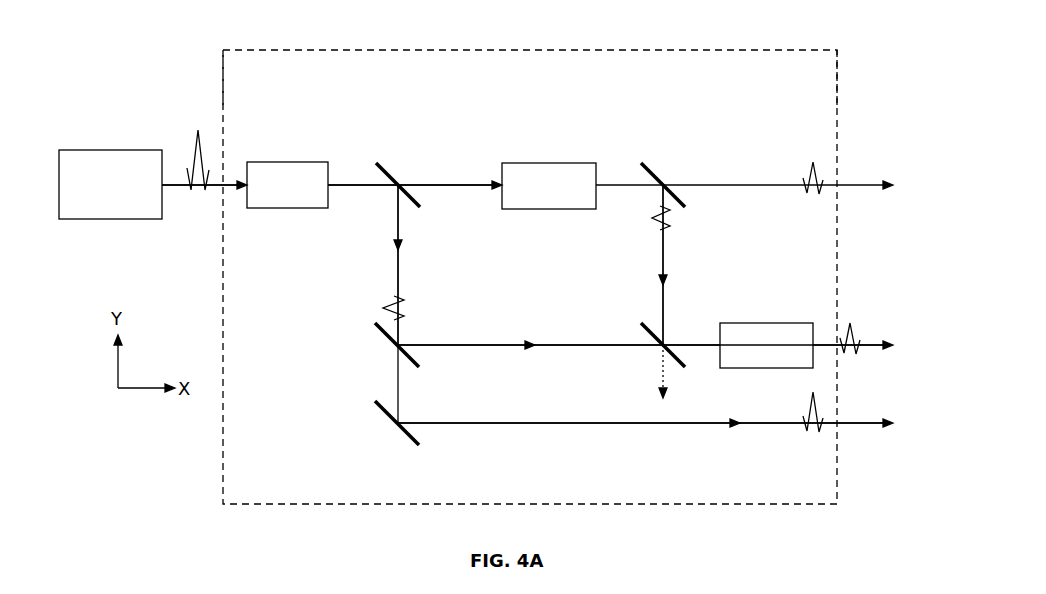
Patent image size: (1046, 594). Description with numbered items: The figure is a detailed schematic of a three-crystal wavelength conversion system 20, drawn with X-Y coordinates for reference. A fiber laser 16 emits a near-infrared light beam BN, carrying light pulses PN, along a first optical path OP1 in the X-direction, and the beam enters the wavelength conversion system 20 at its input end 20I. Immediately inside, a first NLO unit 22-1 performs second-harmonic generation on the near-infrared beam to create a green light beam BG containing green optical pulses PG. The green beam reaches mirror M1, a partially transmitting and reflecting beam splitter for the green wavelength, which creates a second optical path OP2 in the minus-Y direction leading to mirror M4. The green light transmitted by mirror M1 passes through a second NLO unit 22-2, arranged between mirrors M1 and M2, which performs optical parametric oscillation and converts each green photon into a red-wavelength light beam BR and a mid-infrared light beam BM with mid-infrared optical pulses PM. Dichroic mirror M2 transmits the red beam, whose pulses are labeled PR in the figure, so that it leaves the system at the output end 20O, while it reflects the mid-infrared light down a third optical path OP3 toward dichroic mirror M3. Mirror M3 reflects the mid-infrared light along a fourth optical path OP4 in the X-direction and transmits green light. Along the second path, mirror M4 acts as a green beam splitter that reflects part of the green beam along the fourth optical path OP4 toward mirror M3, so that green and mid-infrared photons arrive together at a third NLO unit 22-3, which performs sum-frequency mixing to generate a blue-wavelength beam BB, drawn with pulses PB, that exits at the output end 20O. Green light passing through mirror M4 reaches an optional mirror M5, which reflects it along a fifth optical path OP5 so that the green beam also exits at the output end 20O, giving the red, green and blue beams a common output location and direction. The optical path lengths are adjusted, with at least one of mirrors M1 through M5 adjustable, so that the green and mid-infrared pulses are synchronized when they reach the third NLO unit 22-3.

The fiber laser 16 is at (123, 196).
The wavelength conversion system 20 is at (773, 98).
The input end 20I is at (223, 52).
The output end 20O is at (837, 75).
The first NLO unit 22-1 is at (262, 198).
The second NLO unit 22-2 is at (524, 198).
The third NLO unit 22-3 is at (742, 358).
The mirror M1 is at (380, 160).
The mirror M2 is at (655, 160).
The mirror M3 is at (687, 358).
The mirror M4 is at (375, 325).
The mirror M5 is at (375, 402).
The NIR light beam BN is at (177, 185).
The light pulses PN is at (197, 132).
The green light beam BG is at (345, 185).
The green optical pulses PG is at (385, 308).
The red-wavelength light beam BR is at (860, 185).
The red light pulse PR is at (813, 166).
The MIR light beam BM is at (667, 245).
The MIR optical pulses PM is at (682, 218).
The blue-wavelength beam BB is at (870, 345).
The blue light pulse PB is at (850, 323).
The first optical path OP1 is at (195, 210).
The second optical path OP2 is at (382, 224).
The third optical path OP3 is at (645, 258).
The fourth optical path OP4 is at (556, 328).
The fifth optical path OP5 is at (492, 436).